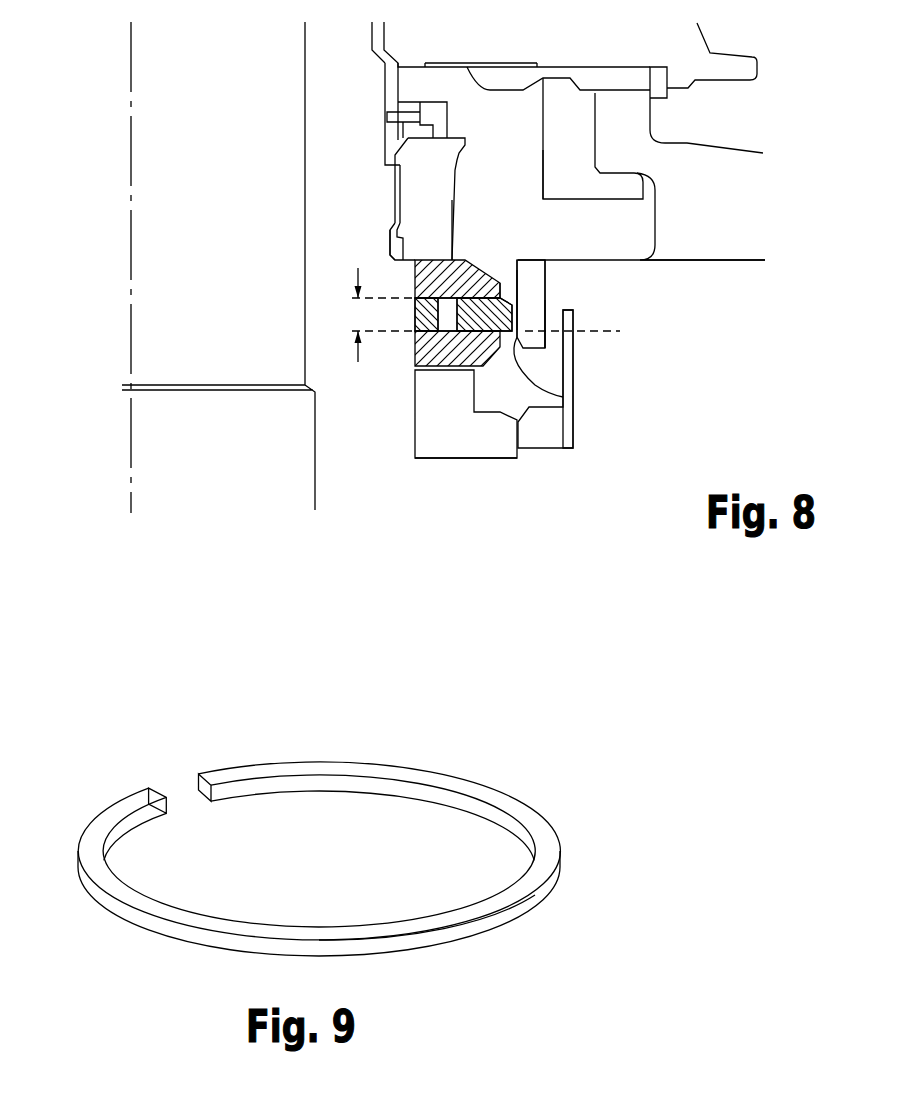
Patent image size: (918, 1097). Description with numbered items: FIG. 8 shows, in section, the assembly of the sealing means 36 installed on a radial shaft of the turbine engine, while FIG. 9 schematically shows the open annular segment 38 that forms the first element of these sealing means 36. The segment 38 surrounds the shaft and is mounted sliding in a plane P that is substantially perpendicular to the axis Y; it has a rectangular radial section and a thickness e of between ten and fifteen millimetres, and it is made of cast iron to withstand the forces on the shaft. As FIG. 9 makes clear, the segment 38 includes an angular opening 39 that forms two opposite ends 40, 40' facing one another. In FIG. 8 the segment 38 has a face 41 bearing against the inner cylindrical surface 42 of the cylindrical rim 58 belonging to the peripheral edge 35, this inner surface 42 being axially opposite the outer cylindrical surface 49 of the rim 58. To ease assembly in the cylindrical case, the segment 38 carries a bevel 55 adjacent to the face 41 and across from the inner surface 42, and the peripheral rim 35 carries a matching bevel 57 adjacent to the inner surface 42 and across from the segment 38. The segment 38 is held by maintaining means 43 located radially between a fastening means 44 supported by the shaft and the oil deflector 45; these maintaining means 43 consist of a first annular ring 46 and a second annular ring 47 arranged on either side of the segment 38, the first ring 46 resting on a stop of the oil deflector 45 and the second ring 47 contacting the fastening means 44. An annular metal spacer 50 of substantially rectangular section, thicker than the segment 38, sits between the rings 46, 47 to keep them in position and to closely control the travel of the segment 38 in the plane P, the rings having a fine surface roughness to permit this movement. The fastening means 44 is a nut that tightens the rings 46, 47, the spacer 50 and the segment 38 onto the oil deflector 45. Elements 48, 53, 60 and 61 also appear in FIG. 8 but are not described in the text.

In FIG. 8, the peripheral edge 35 is at (529, 265).
In FIG. 8, the sealing means 36 is at (340, 287).
In FIG. 8, the open annular segment 38 is at (468, 328).
In FIG. 9, the open annular segment 38 is at (463, 750).
In FIG. 9, the angular opening 39 is at (177, 795).
In FIG. 9, the end 40 is at (221, 754).
In FIG. 9, the end 40' is at (133, 765).
In FIG. 8, the face 41 is at (519, 321).
In FIG. 9, the face 41 is at (522, 905).
In FIG. 8, the inner cylindrical surface 42 is at (515, 263).
In FIG. 8, the maintaining means 43 is at (422, 280).
In FIG. 8, the fastening means 44 is at (427, 200).
In FIG. 8, the oil deflector 45 is at (456, 468).
In FIG. 8, the first annular ring 46 is at (478, 350).
In FIG. 8, the second annular ring 47 is at (397, 213).
In FIG. 8, the radial wall 48 is at (568, 377).
In FIG. 8, the outer cylindrical surface 49 is at (522, 308).
In FIG. 8, the spacer 50 is at (413, 326).
In FIG. 8, the passage 53 is at (503, 235).
In FIG. 8, the bevel 55 is at (519, 282).
In FIG. 8, the bevel 57 is at (563, 397).
In FIG. 8, the cylindrical rim 58 is at (554, 304).
In FIG. 8, the support piece 60 is at (423, 437).
In FIG. 8, the base piece 61 is at (545, 428).
In FIG. 8, the thickness e is at (373, 315).
In FIG. 8, the plane P is at (617, 330).
In FIG. 8, the axis Y is at (131, 53).